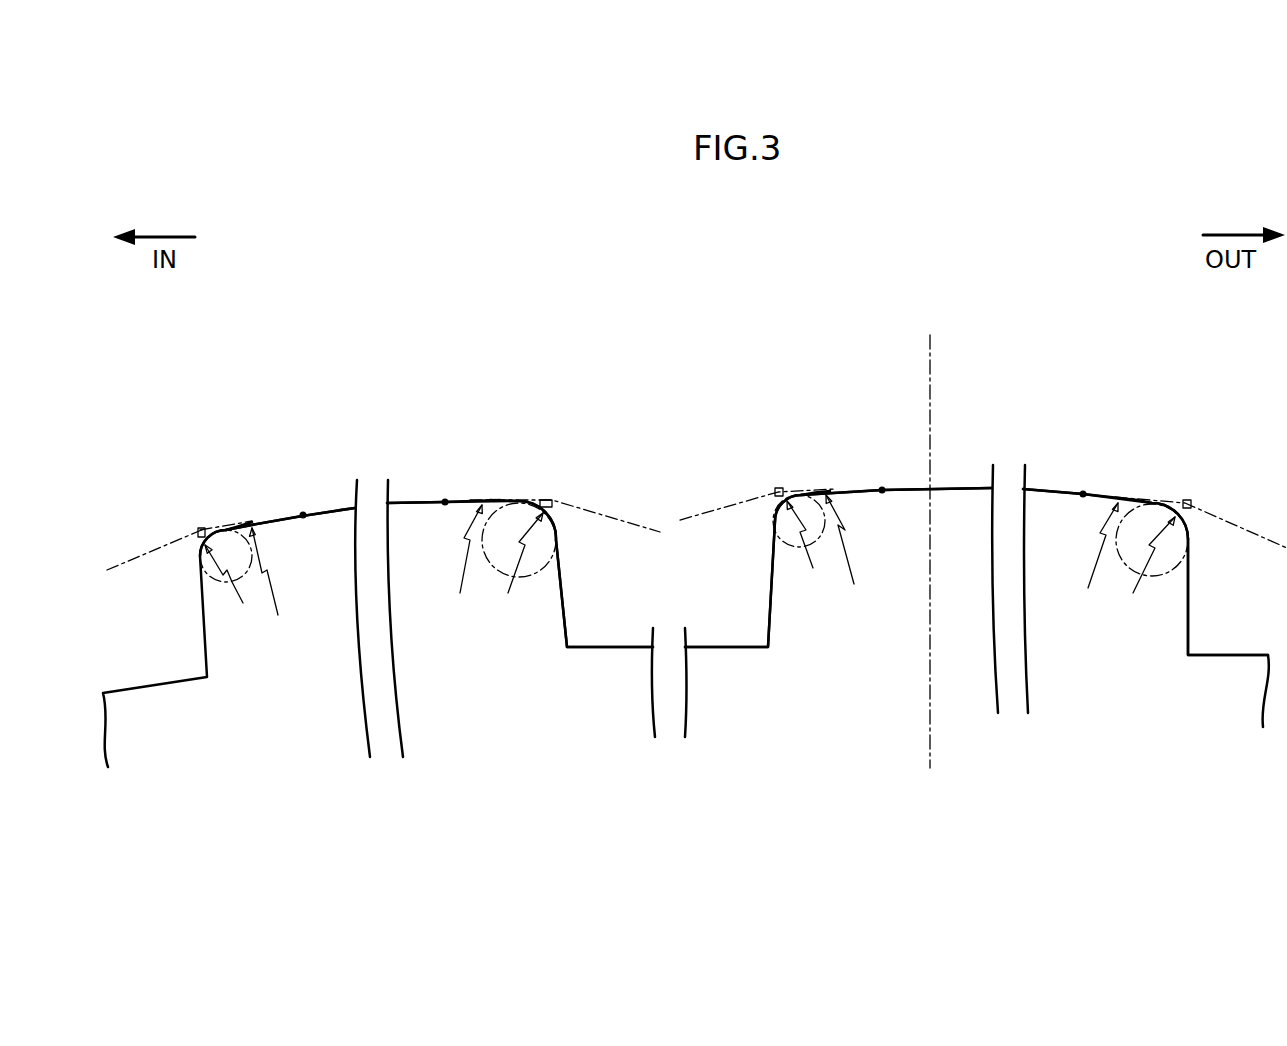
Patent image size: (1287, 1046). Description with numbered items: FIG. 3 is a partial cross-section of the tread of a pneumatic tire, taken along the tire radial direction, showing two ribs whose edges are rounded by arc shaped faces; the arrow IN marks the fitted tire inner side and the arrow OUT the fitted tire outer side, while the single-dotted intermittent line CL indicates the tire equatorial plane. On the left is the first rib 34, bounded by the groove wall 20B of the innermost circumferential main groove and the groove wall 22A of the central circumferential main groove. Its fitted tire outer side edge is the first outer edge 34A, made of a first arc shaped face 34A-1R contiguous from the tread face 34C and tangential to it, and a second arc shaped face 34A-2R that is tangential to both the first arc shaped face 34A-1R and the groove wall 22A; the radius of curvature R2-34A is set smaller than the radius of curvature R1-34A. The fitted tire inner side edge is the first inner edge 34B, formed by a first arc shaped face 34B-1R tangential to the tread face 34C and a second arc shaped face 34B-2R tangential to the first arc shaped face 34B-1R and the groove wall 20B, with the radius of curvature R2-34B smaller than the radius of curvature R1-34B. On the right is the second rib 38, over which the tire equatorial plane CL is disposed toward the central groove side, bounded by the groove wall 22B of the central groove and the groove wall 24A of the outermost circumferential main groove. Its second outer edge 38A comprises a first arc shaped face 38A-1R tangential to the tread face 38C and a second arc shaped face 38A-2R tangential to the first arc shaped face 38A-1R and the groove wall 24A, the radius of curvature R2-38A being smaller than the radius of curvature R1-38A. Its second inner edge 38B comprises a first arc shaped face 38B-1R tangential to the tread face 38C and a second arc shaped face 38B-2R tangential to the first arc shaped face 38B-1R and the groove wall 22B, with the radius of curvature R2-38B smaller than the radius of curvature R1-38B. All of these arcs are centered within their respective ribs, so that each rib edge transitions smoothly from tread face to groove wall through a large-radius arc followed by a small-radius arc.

The first rib 34 is at (380, 388).
The first outer edge 34A is at (510, 483).
The first inner edge 34B is at (216, 508).
The tread face 34C is at (327, 512).
The first arc shaped face 34A-1R is at (497, 498).
The second arc shaped face 34A-2R is at (543, 507).
The first arc shaped face 34B-1R is at (242, 522).
The second arc shaped face 34B-2R is at (197, 533).
The radius of curvature R1-34A is at (460, 593).
The radius of curvature R2-34A is at (508, 593).
The radius of curvature R1-34B is at (278, 615).
The radius of curvature R2-34B is at (243, 603).
The groove wall 20B is at (200, 616).
The groove wall 22A is at (563, 595).
The groove wall 22B is at (770, 597).
The groove wall 24A is at (1190, 612).
The second rib 38 is at (1001, 358).
The second outer edge 38A is at (1150, 460).
The second inner edge 38B is at (804, 471).
The tread face 38C is at (957, 487).
The first arc shaped face 38A-1R is at (1140, 497).
The second arc shaped face 38A-2R is at (1187, 503).
The first arc shaped face 38B-1R is at (822, 488).
The second arc shaped face 38B-2R is at (778, 491).
The radius of curvature R1-38A is at (1088, 588).
The radius of curvature R2-38A is at (1133, 593).
The radius of curvature R1-38B is at (874, 595).
The radius of curvature R2-38B is at (813, 568).
The tire equatorial plane CL is at (930, 345).